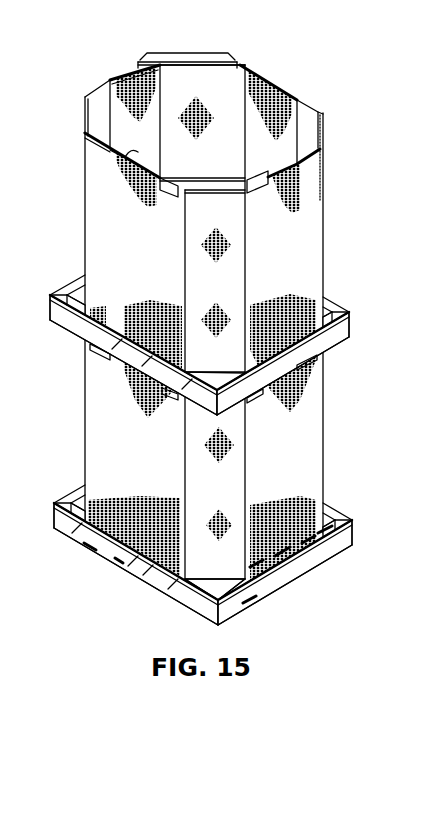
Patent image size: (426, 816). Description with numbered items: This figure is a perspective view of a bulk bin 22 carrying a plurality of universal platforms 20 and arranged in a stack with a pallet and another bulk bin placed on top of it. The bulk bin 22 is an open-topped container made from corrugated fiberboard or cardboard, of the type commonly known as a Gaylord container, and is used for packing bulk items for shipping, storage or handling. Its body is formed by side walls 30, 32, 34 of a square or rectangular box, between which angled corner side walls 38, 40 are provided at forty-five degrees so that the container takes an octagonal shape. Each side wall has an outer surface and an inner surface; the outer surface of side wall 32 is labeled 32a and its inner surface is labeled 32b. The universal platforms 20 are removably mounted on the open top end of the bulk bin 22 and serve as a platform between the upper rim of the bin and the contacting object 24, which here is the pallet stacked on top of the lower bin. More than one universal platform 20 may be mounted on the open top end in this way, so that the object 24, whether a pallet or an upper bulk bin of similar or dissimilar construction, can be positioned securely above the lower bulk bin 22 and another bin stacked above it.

The universal platform 20 is at (228, 55).
The bulk bin 22 is at (302, 234).
The object 24 is at (343, 327).
The side wall 30 is at (152, 105).
The side wall 32 is at (110, 260).
The outer surface of side wall 32a is at (108, 233).
The inner surface of side wall 32b is at (117, 153).
The side wall 34 is at (260, 530).
The corner side wall 38 is at (83, 118).
The corner side wall 40 is at (200, 563).